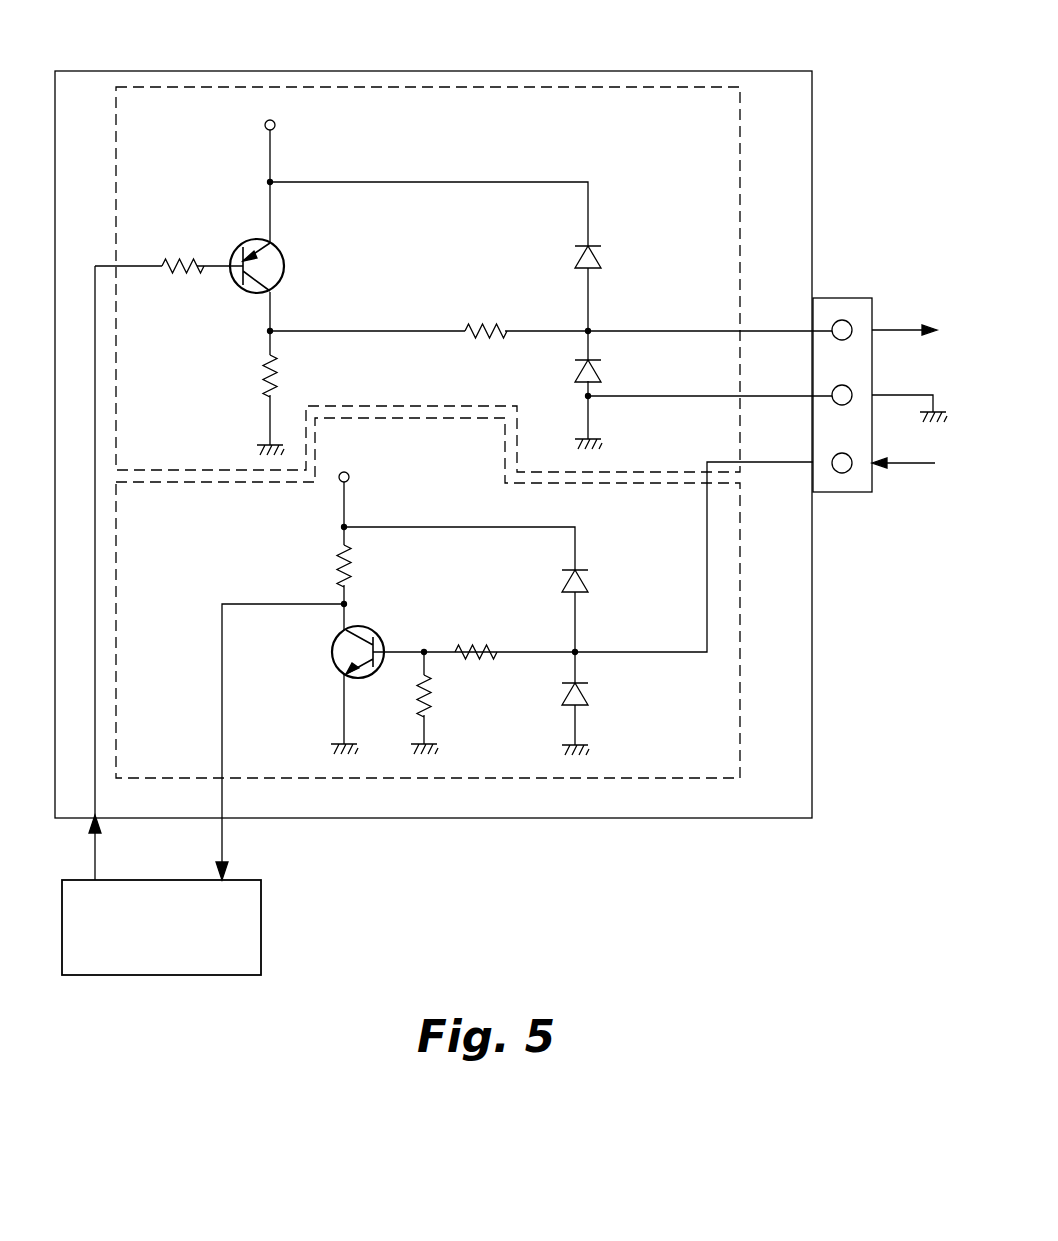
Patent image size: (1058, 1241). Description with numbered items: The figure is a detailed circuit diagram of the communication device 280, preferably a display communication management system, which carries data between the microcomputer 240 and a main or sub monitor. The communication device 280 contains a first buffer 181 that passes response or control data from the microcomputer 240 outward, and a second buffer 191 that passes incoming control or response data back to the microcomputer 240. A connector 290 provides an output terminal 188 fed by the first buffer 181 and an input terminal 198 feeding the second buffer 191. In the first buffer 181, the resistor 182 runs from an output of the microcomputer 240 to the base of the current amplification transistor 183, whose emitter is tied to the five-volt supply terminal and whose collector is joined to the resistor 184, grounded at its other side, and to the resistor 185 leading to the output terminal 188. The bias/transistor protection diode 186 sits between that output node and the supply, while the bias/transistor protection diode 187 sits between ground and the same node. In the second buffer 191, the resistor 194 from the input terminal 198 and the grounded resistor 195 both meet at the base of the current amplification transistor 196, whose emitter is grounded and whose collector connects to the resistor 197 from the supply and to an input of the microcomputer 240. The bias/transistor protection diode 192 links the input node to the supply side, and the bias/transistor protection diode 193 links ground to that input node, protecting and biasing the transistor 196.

The communication device 280 is at (465, 86).
The first buffer 181 is at (203, 93).
The second buffer 191 is at (552, 780).
The resistor 182 is at (185, 258).
The current amplification transistor 183 is at (285, 264).
The resistor 184 is at (267, 375).
The resistor 185 is at (478, 325).
The bias/transistor protection diode 186 is at (601, 262).
The bias/transistor protection diode 187 is at (573, 373).
The connector 290 is at (845, 298).
The output terminal 188 is at (853, 320).
The input terminal 198 is at (843, 474).
The resistor 197 is at (337, 548).
The current amplification transistor 196 is at (333, 655).
The resistor 194 is at (460, 642).
The resistor 195 is at (430, 684).
The bias/transistor protection diode 192 is at (588, 581).
The bias/transistor protection diode 193 is at (588, 697).
The microcomputer 240 is at (262, 933).